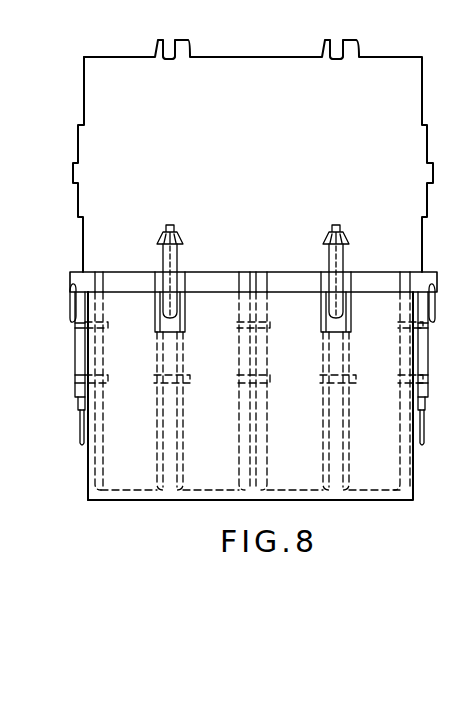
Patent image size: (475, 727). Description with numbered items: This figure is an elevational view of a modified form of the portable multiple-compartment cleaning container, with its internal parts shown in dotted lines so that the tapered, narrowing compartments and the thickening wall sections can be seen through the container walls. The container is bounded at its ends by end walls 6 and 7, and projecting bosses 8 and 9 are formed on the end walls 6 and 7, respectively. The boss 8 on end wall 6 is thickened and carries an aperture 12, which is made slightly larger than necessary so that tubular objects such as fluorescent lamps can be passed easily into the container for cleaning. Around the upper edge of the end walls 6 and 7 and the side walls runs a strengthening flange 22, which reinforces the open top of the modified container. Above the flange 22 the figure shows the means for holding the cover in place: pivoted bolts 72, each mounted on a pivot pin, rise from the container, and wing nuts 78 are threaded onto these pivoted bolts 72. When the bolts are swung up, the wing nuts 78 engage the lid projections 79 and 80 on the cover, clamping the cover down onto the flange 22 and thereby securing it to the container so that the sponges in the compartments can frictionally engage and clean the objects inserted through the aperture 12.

The end wall 6 is at (413, 458).
The end wall 7 is at (88, 461).
The projecting boss 8 is at (440, 276).
The projecting boss 9 is at (68, 275).
The aperture 12 is at (428, 383).
The strengthening flange 22 is at (235, 285).
The pivoted bolt 72 is at (176, 265).
The wing nut 78 is at (173, 225).
The lid projection 79 is at (348, 44).
The lid projection 80 is at (181, 44).